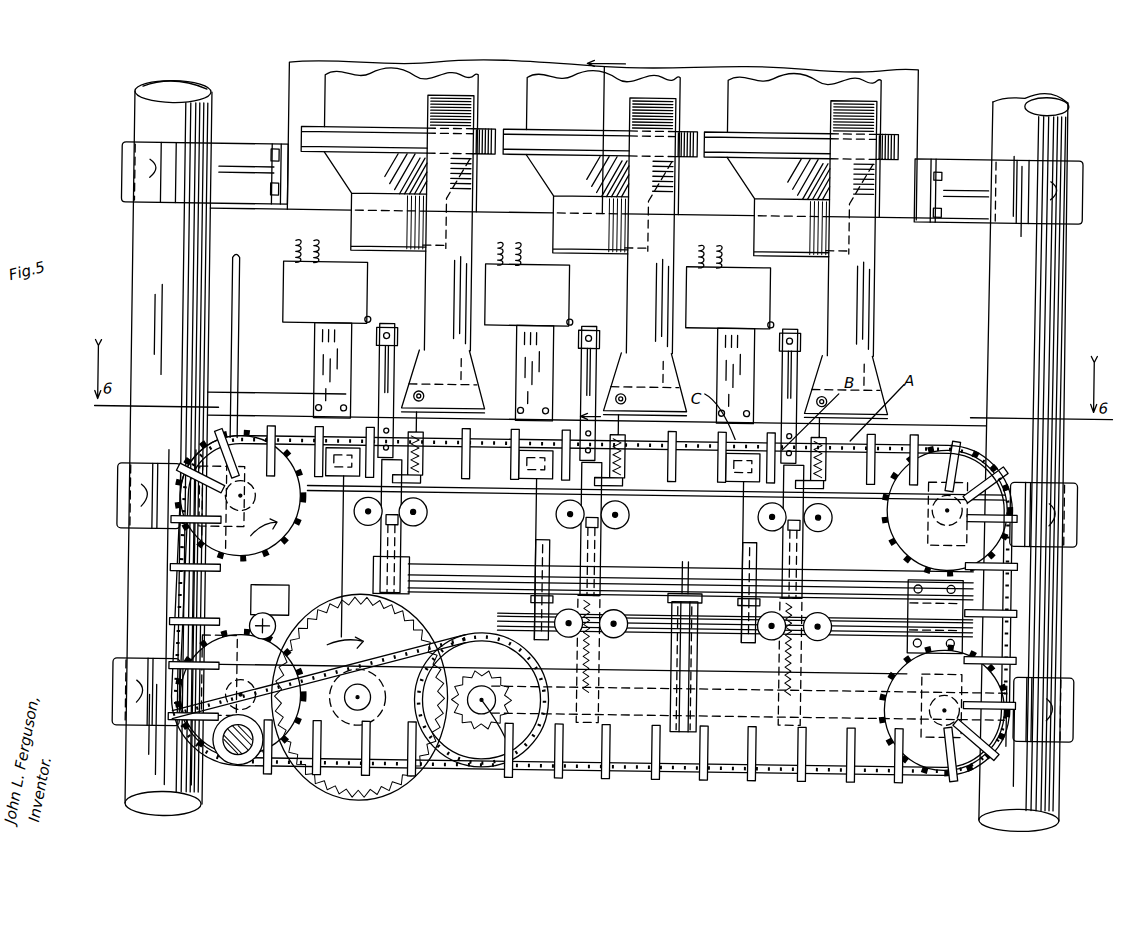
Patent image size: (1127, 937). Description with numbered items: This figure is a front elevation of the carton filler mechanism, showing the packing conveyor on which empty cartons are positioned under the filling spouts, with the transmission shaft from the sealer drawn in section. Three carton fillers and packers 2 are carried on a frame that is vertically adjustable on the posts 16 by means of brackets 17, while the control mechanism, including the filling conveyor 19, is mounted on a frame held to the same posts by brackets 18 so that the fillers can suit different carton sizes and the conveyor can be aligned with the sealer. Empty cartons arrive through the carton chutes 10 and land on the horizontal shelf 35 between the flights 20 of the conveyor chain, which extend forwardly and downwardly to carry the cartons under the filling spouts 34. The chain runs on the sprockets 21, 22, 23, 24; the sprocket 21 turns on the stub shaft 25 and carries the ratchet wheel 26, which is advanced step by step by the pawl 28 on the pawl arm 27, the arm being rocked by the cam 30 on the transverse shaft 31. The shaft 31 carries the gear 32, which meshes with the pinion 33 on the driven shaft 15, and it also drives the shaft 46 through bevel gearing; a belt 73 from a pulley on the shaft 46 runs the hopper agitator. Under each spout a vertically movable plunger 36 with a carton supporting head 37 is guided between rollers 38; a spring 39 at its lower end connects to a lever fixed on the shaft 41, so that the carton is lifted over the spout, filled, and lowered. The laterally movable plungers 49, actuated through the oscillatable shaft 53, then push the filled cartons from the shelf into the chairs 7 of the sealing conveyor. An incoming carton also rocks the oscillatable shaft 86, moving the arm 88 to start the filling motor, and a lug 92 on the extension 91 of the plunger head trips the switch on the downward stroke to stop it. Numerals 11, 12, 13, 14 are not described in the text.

The carton fillers and packers 2 is at (602, 142).
The chairs of the sealing conveyor 7 is at (597, 68).
The carton chutes 10 is at (470, 345).
The drive chain 11 is at (262, 775).
The lower left sprocket 12 is at (228, 770).
The drive sprocket 13 is at (500, 765).
The hub sprocket 14 is at (240, 770).
The driven shaft 15 is at (520, 770).
The posts 16 is at (130, 770).
The brackets 17 is at (238, 210).
The brackets 18 is at (118, 476).
The filling conveyor 19 is at (589, 781).
The flights 20 is at (685, 478).
The sprocket 21 is at (175, 705).
The sprocket 22 is at (190, 538).
The sprocket 23 is at (940, 470).
The sprocket 24 is at (930, 770).
The stub shaft 25 is at (200, 740).
The ratchet wheel 26 is at (172, 629).
The pawl arm 27 is at (172, 644).
The pawl 28 is at (237, 620).
The cam 30 is at (356, 800).
The transverse shaft 31 is at (365, 705).
The gear 32 is at (312, 800).
The pinion 33 is at (552, 798).
The filling spouts 34 is at (423, 297).
The horizontal shelf 35 is at (700, 495).
The vertically movable plungers 36 is at (414, 555).
The carton supporting heads 37 is at (428, 510).
The rollers 38 is at (380, 528).
The spring 39 is at (783, 655).
The shaft 41 is at (675, 577).
The shaft 46 is at (690, 690).
The laterally movable plungers 49 is at (340, 480).
The oscillatable shaft 53 is at (700, 610).
The belt 73 is at (238, 370).
The oscillatable shaft 86 is at (422, 430).
The arm 88 is at (422, 400).
The extension 91 is at (579, 393).
The lug 92 is at (374, 346).